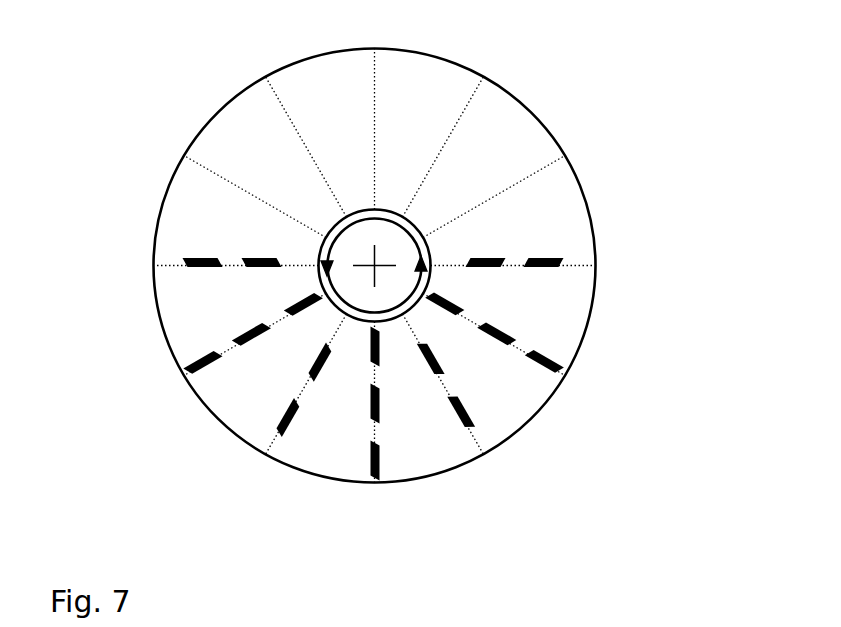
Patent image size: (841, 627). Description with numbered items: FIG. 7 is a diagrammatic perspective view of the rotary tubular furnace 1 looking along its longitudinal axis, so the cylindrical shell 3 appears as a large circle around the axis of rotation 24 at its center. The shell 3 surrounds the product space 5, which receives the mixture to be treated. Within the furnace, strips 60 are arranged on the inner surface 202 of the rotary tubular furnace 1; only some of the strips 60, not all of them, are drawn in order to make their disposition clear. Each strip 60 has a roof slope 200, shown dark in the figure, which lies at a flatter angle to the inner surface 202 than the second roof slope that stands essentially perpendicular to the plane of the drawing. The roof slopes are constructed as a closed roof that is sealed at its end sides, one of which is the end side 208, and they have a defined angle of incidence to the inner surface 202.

The rotary tubular furnace 1 is at (384, 318).
The cylindrical shell 3 is at (614, 121).
The product space 5 is at (545, 300).
The axis of rotation 24 is at (372, 265).
The strips 60 is at (558, 367).
The roof slope 200 is at (381, 405).
The inner surface 202 is at (238, 404).
The end side 208 is at (518, 254).